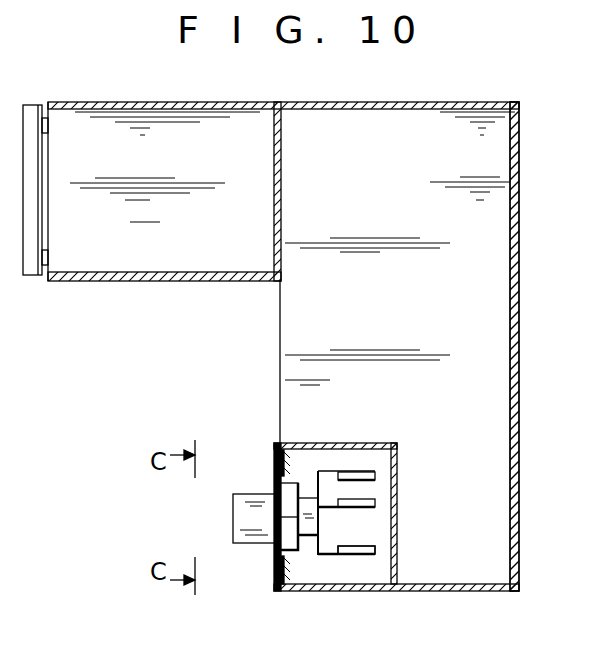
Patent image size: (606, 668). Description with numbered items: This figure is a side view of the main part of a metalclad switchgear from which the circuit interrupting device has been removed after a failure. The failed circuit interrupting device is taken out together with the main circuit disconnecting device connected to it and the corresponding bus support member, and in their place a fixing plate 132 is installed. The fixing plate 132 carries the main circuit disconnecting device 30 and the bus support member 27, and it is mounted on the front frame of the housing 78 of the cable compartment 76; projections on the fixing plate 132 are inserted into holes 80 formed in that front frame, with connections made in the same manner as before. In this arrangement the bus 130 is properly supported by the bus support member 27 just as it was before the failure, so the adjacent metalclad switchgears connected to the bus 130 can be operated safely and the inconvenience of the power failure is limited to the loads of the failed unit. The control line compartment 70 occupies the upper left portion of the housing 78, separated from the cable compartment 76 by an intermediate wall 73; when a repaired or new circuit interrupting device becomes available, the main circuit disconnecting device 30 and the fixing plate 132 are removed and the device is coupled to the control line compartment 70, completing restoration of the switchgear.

The control line compartment 70 is at (134, 265).
The dividing wall 73 is at (280, 320).
The cable compartment 76 is at (492, 328).
The housing 78 is at (519, 395).
The main circuit disconnecting device 30 is at (250, 540).
The holes 80 is at (284, 573).
The bus support member 27 is at (335, 560).
The bus 130 is at (368, 560).
The fixing plate 132 is at (279, 586).